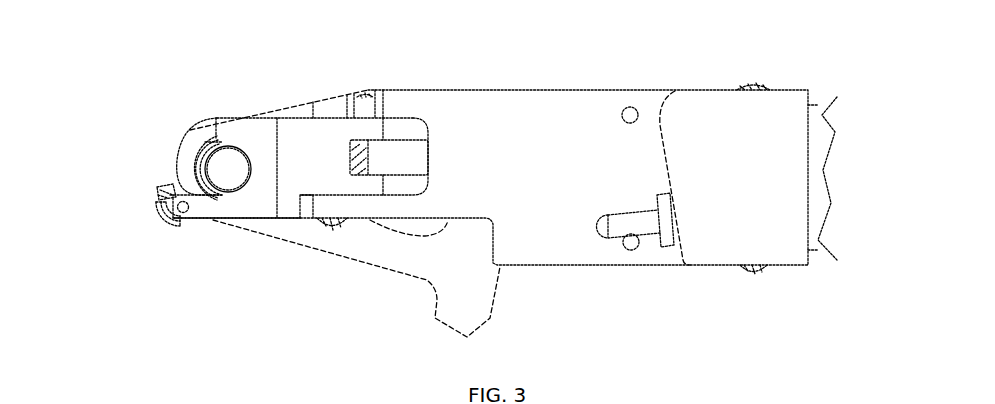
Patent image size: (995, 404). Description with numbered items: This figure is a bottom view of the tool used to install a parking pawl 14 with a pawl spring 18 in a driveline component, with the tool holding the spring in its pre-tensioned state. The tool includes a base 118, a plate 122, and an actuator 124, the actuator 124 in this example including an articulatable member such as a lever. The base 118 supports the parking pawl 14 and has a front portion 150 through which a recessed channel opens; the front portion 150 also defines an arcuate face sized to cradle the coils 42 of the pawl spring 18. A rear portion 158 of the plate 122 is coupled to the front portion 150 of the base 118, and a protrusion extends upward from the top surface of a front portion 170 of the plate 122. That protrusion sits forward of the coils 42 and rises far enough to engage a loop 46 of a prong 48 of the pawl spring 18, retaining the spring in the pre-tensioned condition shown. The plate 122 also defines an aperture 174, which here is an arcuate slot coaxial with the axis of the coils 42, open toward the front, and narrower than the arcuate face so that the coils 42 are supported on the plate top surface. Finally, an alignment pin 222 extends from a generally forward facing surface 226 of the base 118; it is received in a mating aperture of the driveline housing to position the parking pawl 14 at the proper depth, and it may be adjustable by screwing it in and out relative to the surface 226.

The parking pawl 14 is at (472, 310).
The pawl spring 18 is at (160, 200).
The coils 42 is at (198, 150).
The loop 46 is at (167, 227).
The prong 48 is at (160, 185).
The base 118 is at (585, 132).
The plate 122 is at (263, 207).
The actuator 124 is at (405, 137).
The front portion 150 is at (333, 97).
The rear portion 158 is at (373, 187).
The front portion 170 is at (198, 219).
The aperture 174 is at (248, 172).
The alignment pin 222 is at (613, 235).
The forward facing surface 226 is at (666, 165).